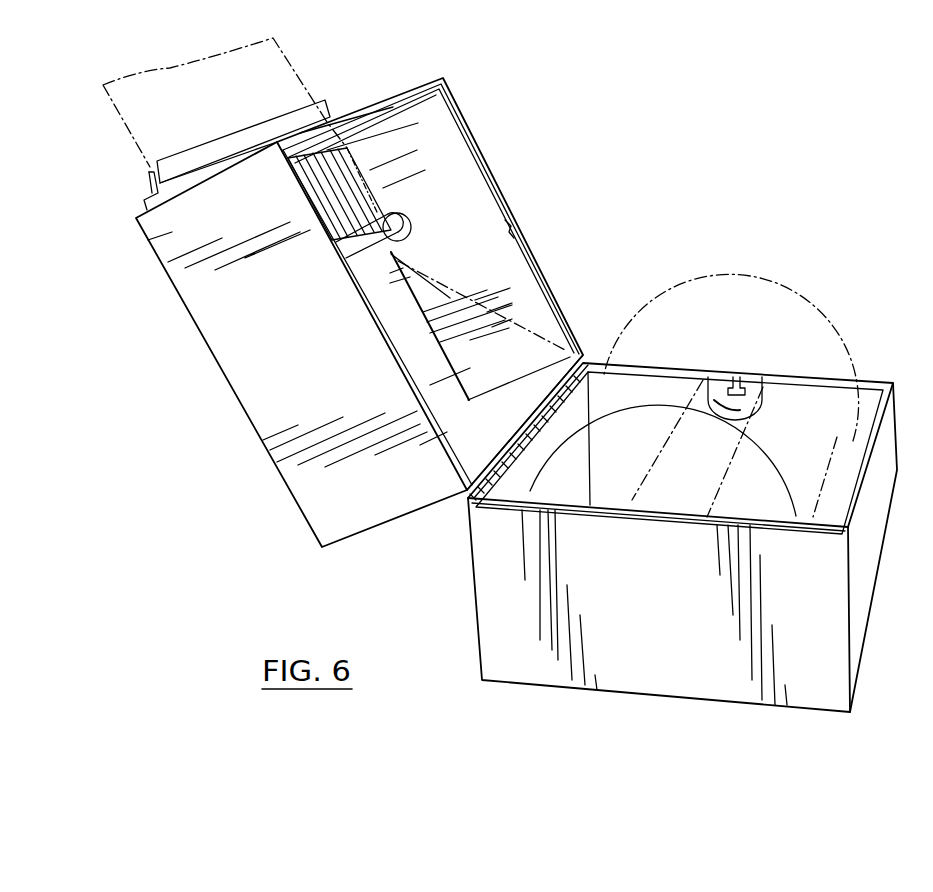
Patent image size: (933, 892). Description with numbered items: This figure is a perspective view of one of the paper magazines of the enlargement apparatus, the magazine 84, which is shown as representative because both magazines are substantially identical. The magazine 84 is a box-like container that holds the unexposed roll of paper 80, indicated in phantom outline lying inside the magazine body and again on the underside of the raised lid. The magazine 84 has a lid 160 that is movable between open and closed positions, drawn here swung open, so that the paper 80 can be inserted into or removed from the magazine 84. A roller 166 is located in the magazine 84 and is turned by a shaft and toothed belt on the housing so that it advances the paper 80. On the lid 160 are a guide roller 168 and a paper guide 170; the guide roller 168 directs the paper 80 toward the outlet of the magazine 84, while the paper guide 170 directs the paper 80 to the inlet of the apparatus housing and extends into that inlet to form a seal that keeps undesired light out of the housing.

The paper 80 is at (292, 88).
The magazine 84 is at (860, 553).
The lid 160 is at (480, 170).
The roller 166 is at (732, 375).
The guide roller 168 is at (388, 223).
The paper guide 170 is at (149, 172).